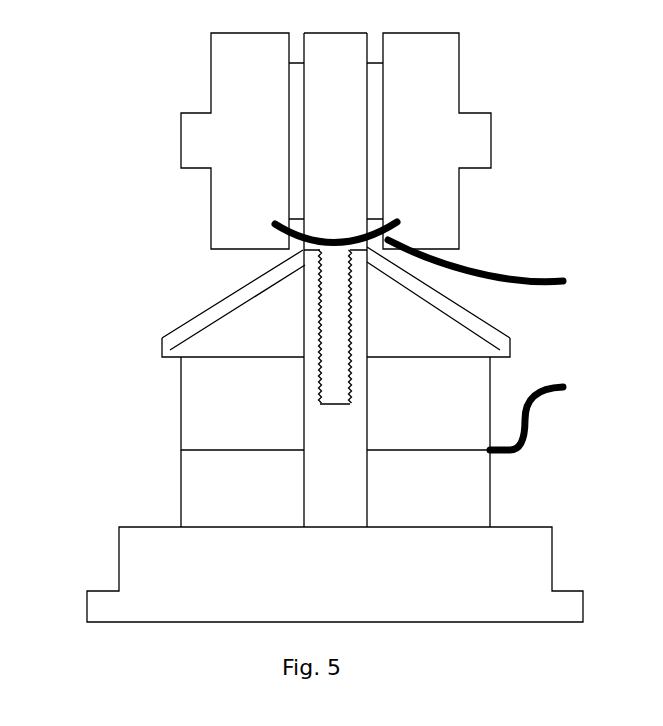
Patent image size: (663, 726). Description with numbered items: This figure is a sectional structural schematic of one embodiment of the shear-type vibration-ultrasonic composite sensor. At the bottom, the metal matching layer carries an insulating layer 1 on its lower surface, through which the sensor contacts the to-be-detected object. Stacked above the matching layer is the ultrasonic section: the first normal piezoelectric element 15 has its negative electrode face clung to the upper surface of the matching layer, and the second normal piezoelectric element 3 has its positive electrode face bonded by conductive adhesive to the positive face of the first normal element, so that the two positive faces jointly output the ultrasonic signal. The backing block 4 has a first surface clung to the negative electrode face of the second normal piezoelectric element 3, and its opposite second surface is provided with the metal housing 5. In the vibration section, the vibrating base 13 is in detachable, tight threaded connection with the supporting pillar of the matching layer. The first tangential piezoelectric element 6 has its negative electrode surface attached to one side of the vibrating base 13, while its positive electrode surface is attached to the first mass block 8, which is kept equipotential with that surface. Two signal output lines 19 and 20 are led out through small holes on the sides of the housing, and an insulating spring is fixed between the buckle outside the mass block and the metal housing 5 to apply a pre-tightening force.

The insulating layer 1 is at (119, 568).
The second normal piezoelectric element 3 is at (181, 413).
The backing block 4 is at (258, 330).
The metal housing 5 is at (263, 282).
The first tangential piezoelectric element 6 is at (297, 146).
The first mass block 8 is at (250, 83).
The vibrating base 13 is at (337, 202).
The first normal piezoelectric element 15 is at (181, 487).
The signal output line 19 is at (542, 380).
The signal output line 20 is at (527, 278).